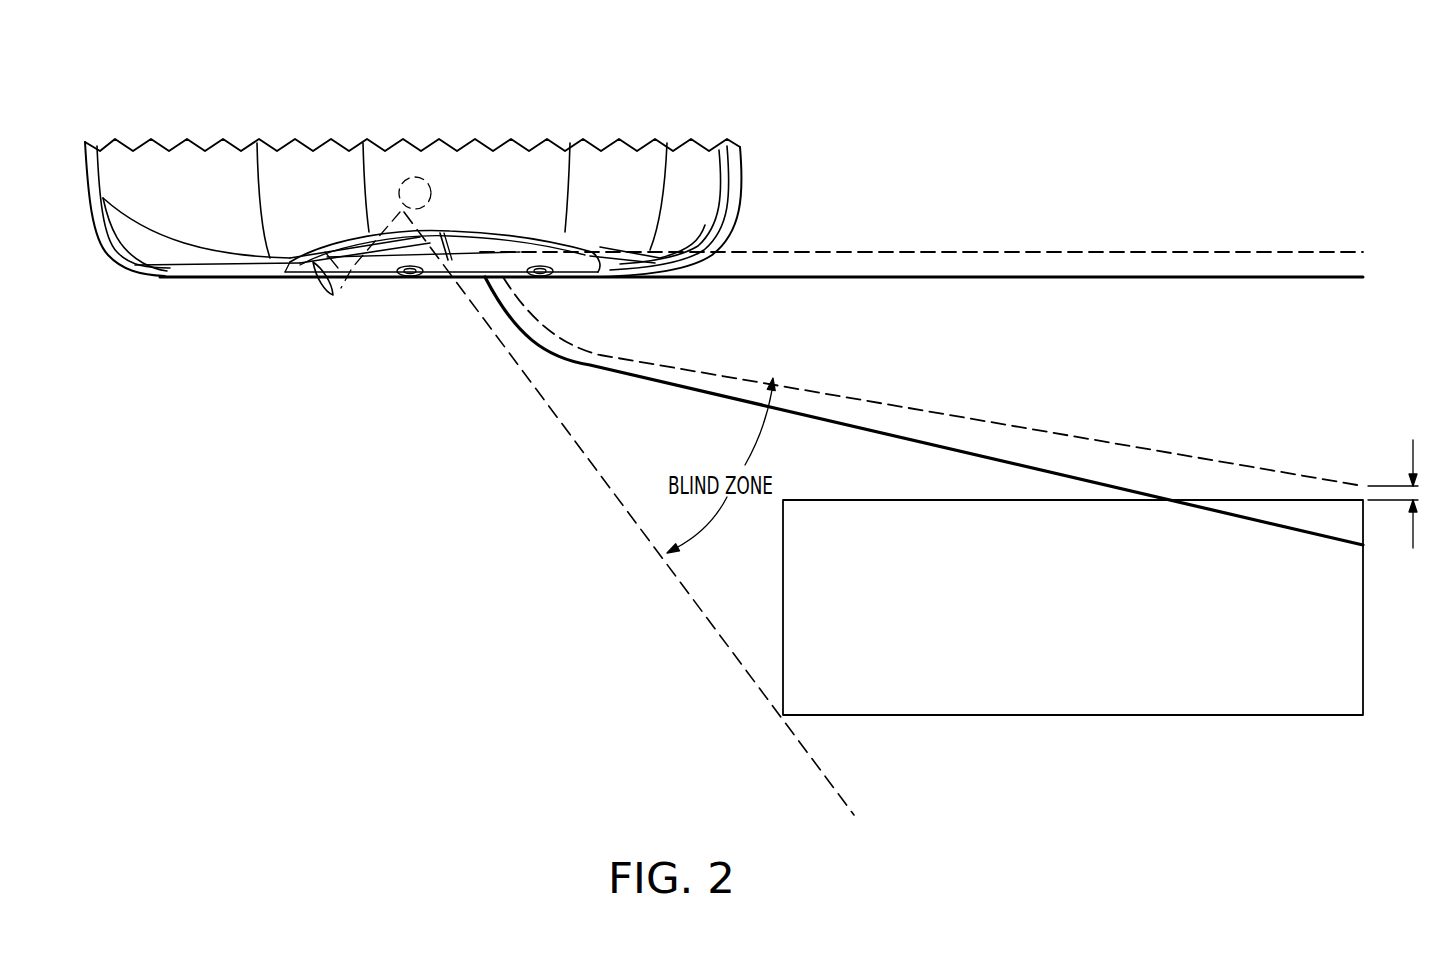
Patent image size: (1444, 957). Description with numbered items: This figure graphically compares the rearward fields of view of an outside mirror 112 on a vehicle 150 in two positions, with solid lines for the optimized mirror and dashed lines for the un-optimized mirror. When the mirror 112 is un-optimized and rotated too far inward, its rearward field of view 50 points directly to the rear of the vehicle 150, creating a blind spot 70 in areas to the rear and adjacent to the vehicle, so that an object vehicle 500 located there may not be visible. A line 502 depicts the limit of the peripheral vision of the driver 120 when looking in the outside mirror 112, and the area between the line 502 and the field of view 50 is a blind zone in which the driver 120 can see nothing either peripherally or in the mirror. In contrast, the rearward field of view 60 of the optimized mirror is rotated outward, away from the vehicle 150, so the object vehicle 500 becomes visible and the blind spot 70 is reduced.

The vehicle 150 is at (413, 160).
The driver 120 is at (453, 227).
The outside mirror 112 is at (333, 293).
The rearward field of view of the un-optimized mirror 50 is at (855, 250).
The rearward field of view of the optimized mirror 60 is at (1167, 276).
The blind spot 70 is at (1398, 478).
The object vehicle 500 is at (1073, 680).
The line 502 is at (686, 584).